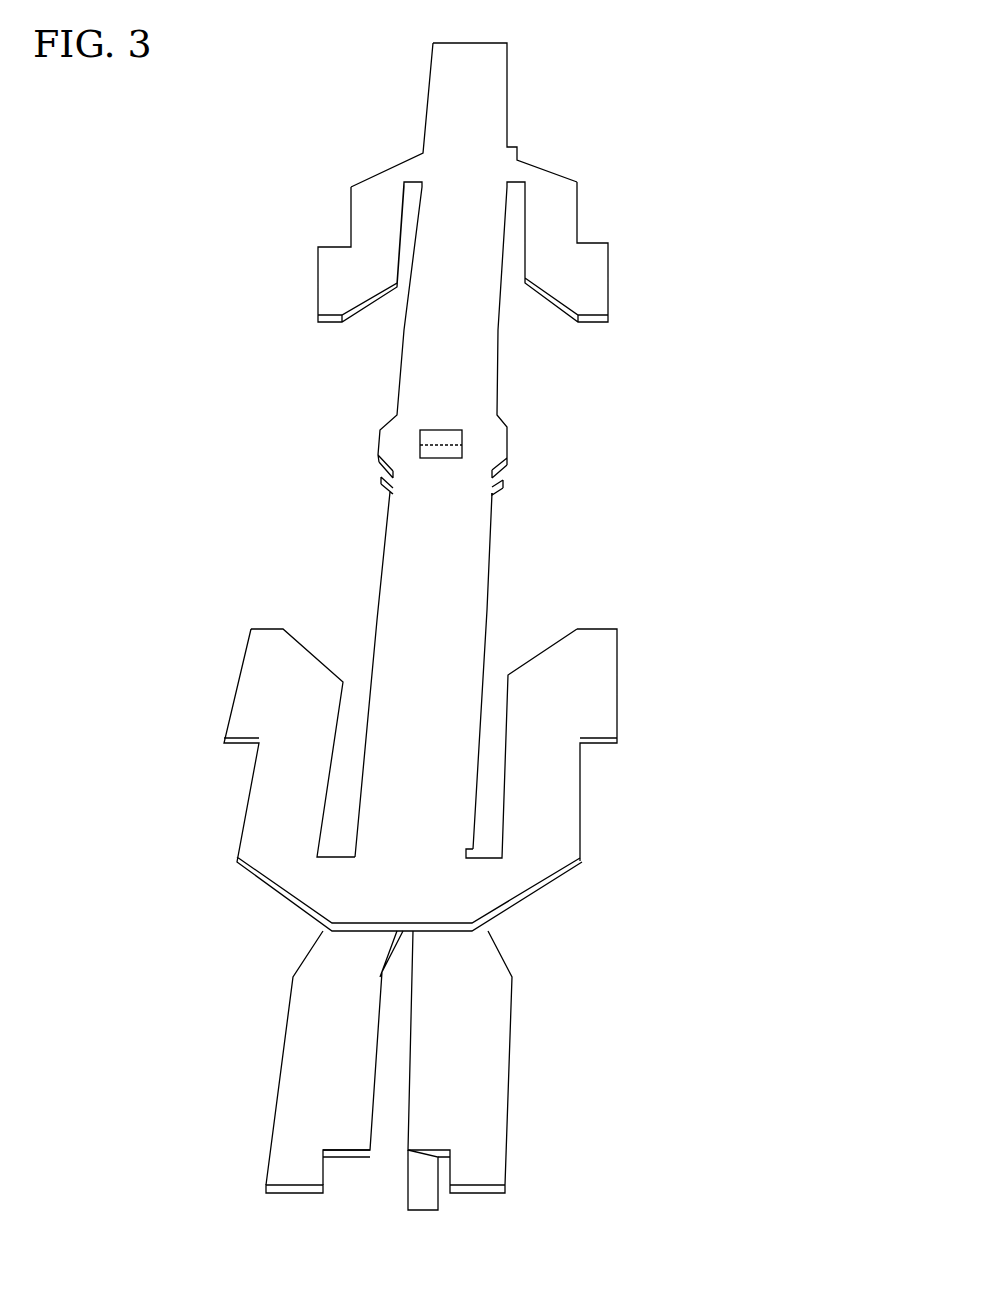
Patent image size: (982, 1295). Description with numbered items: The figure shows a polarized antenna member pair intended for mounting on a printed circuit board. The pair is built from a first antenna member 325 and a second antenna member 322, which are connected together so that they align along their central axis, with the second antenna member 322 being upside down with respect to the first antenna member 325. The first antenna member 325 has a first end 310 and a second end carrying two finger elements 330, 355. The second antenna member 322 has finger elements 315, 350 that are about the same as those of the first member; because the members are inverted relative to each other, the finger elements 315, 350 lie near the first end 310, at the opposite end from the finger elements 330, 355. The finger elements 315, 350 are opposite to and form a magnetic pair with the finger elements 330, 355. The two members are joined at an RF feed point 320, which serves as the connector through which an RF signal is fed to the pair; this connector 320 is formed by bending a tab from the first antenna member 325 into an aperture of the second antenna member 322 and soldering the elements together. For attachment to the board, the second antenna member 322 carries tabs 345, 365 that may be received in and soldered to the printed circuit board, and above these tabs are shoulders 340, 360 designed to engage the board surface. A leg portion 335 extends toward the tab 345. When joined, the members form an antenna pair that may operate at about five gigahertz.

The first end 310 is at (452, 103).
The finger element 315 is at (333, 272).
The finger element 350 is at (600, 278).
The RF feed point 320 is at (437, 438).
The second antenna member 322 is at (497, 477).
The first antenna member 325 is at (405, 533).
The finger element 330 is at (268, 714).
The finger element 355 is at (582, 697).
The left leg 335 is at (313, 1024).
The shoulder 340 is at (338, 1134).
The tab 345 is at (290, 1167).
The shoulder 360 is at (452, 1128).
The tab 365 is at (482, 1161).